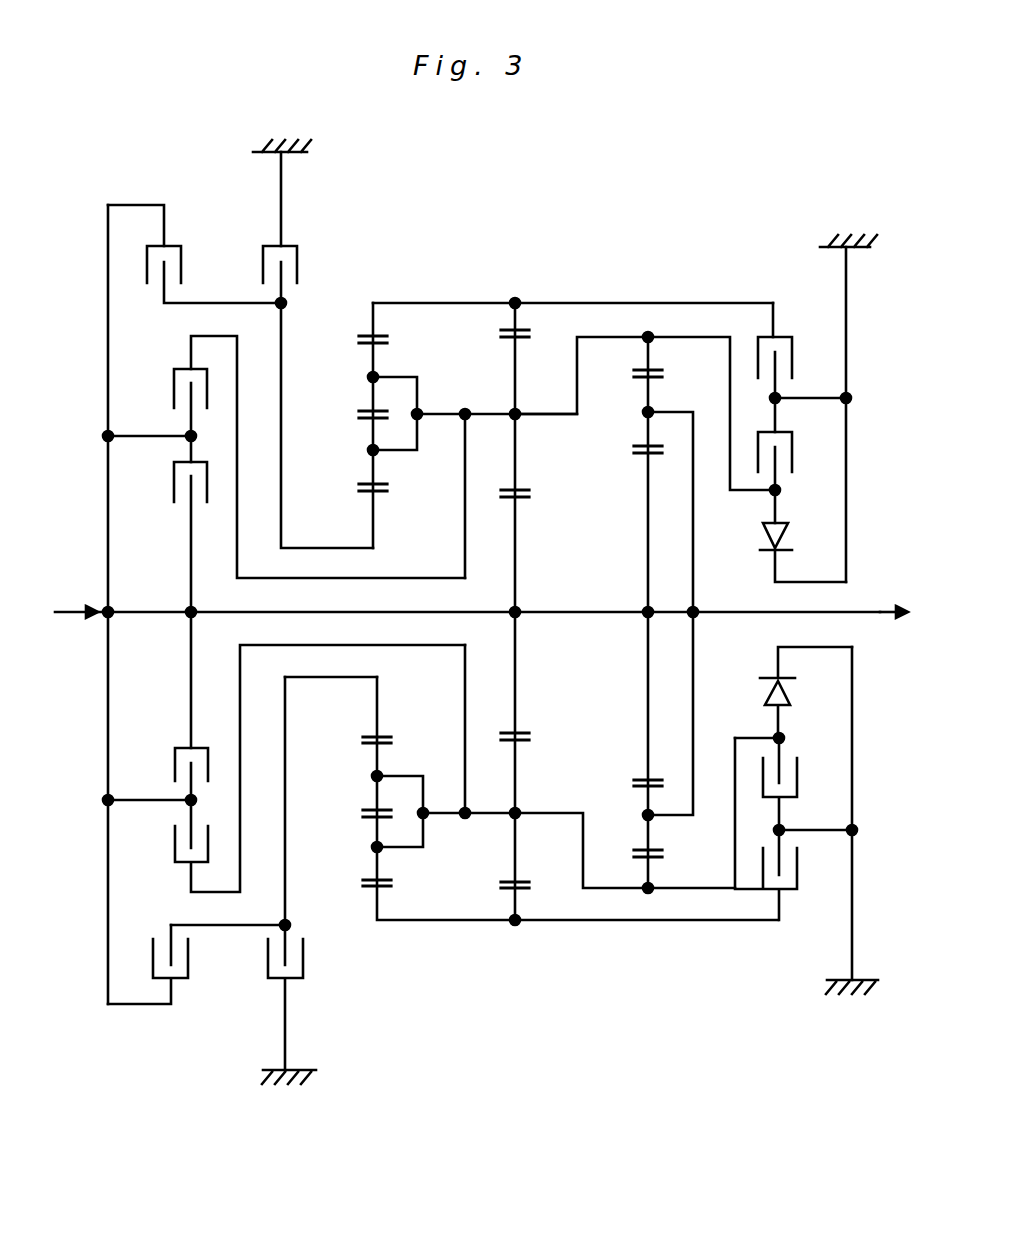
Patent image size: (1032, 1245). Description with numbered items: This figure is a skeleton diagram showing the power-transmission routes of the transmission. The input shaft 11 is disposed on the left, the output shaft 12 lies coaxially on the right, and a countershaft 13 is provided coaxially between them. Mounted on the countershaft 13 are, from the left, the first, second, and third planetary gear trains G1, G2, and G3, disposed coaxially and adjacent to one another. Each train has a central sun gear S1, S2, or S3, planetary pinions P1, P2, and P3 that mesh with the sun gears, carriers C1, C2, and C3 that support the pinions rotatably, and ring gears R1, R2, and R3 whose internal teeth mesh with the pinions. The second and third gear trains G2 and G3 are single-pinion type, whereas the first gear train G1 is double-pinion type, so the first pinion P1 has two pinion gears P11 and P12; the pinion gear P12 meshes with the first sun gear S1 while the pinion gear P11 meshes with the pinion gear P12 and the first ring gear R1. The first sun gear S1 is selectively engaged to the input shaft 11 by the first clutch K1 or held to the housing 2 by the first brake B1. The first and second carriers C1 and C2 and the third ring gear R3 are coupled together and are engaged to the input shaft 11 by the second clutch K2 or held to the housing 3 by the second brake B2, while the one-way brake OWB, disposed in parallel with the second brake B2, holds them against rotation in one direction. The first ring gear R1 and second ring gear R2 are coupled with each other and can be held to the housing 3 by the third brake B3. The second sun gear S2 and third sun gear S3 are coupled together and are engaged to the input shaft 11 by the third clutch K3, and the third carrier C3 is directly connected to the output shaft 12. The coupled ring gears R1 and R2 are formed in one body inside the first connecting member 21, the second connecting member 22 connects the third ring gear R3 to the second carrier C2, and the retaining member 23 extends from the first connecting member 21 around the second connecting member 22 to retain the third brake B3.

The housing 2 is at (253, 152).
The housing 3 is at (820, 248).
The input shaft 11 is at (97, 608).
The output shaft 12 is at (872, 616).
The countershaft 13 is at (565, 614).
The first connecting member 21 is at (446, 303).
The second connecting member 22 is at (615, 337).
The retaining member 23 is at (701, 303).
The first clutch K1 is at (182, 262).
The second clutch K2 is at (172, 388).
The third clutch K3 is at (174, 473).
The first brake B1 is at (268, 952).
The second brake B2 is at (800, 780).
The third brake B3 is at (798, 866).
The one-way brake OWB is at (765, 701).
The first planetary gear train G1 is at (531, 593).
The second planetary gear train G2 is at (542, 667).
The third planetary gear train G3 is at (652, 684).
The first planetary pinion P1 is at (415, 446).
The pinion gear P11 is at (359, 346).
The pinion gear P12 is at (363, 420).
The first ring gear R1 is at (387, 340).
The first carrier C1 is at (418, 411).
The first sun gear S1 is at (381, 491).
The second ring gear R2 is at (526, 331).
The second planetary pinion P2 is at (520, 341).
The second carrier C2 is at (549, 416).
The second sun gear S2 is at (524, 500).
The third ring gear R3 is at (661, 373).
The third planetary pinion P3 is at (641, 380).
The third carrier C3 is at (664, 411).
The third sun gear S3 is at (642, 453).